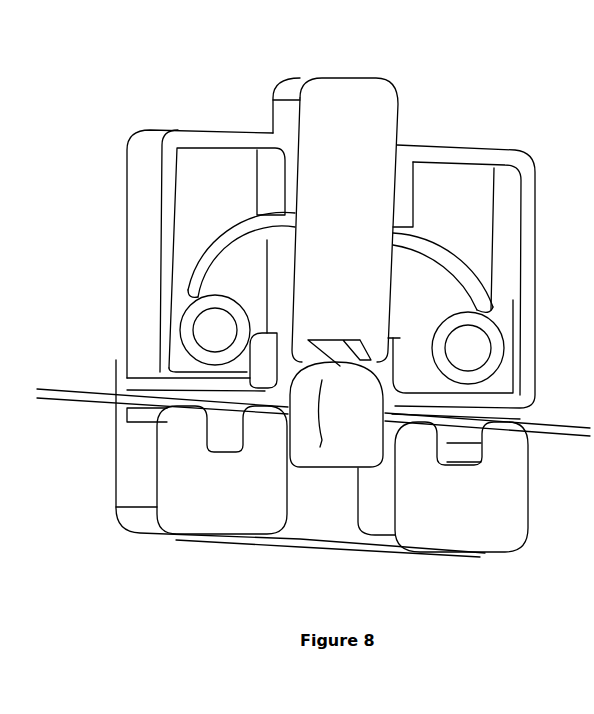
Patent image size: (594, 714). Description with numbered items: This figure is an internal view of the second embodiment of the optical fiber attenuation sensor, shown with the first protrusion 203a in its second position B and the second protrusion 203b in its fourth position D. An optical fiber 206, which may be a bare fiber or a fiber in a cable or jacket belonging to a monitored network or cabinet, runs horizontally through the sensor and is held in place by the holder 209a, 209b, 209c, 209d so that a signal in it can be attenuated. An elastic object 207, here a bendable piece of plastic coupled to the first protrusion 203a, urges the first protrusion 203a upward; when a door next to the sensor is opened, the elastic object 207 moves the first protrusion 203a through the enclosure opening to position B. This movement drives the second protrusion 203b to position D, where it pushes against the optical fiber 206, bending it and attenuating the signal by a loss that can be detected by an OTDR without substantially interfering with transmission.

The first protrusion 203a is at (321, 90).
The second protrusion 203b is at (320, 452).
The optical fiber 206 is at (105, 400).
The elastic object 207 is at (223, 247).
The holder 209a is at (250, 386).
The holder 209b is at (268, 413).
The holder 209c is at (425, 397).
The holder 209d is at (420, 428).